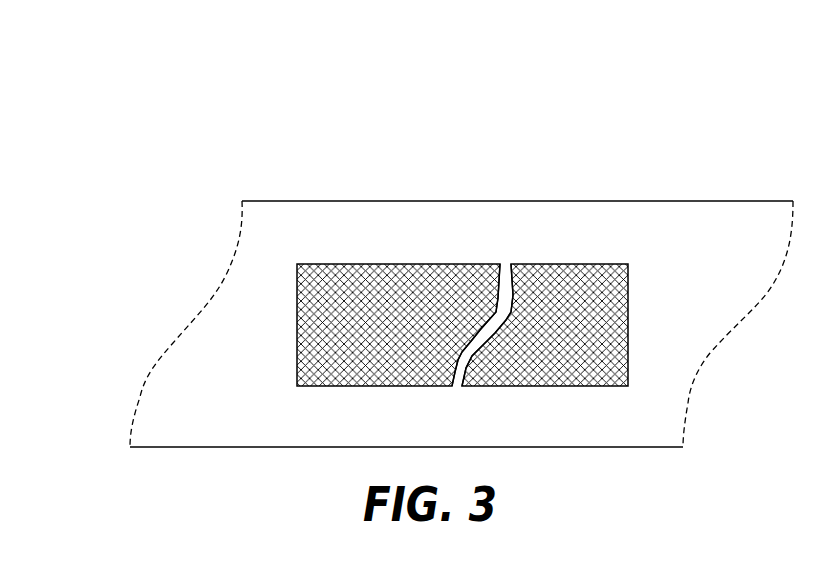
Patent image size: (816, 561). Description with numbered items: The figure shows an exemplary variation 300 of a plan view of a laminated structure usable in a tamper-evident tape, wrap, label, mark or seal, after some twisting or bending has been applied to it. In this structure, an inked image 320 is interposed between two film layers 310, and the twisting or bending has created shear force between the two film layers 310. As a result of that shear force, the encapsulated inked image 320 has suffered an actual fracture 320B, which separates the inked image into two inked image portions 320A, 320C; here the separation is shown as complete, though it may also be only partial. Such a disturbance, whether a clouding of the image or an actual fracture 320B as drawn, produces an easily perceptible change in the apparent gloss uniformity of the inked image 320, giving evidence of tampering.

The exemplary variation of the laminated structure 300 is at (206, 201).
The film layers 310 is at (256, 247).
The inked image 320 is at (602, 148).
The inked image portion 320A is at (462, 275).
The fracture 320B is at (507, 275).
The inked image portion 320C is at (558, 275).